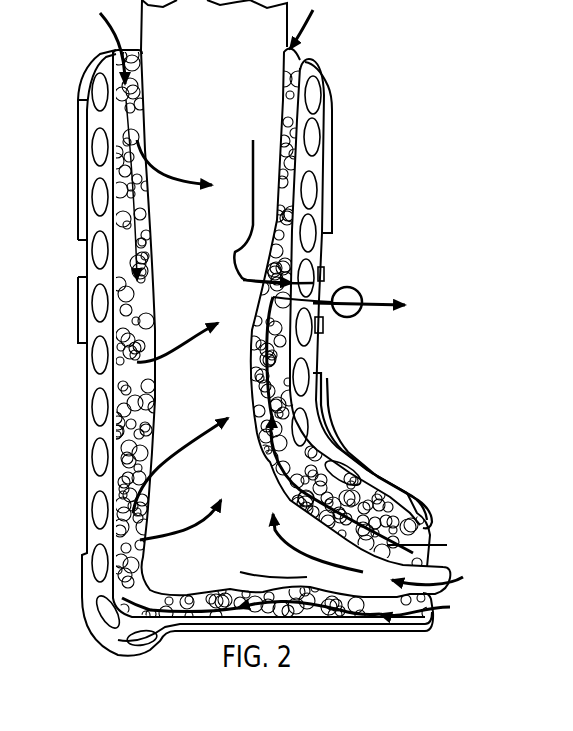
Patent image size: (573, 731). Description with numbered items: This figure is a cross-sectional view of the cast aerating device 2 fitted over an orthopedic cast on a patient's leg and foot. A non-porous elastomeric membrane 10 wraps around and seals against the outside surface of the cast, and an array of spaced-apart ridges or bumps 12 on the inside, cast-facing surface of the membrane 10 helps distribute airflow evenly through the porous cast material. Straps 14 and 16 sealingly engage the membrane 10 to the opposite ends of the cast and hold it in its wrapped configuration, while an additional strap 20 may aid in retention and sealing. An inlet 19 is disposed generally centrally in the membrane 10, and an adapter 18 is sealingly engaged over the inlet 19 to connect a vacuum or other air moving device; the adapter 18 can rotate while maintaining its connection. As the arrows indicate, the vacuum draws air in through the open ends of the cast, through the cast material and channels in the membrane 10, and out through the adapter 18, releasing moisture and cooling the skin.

The orthosis 2 is at (356, 128).
The membrane 10 is at (320, 257).
The bumps 12 is at (319, 363).
The strap 14 is at (353, 457).
The strap 16 is at (329, 206).
The adapter 18 is at (359, 310).
The inlet 19 is at (325, 273).
The strap 20 is at (80, 312).